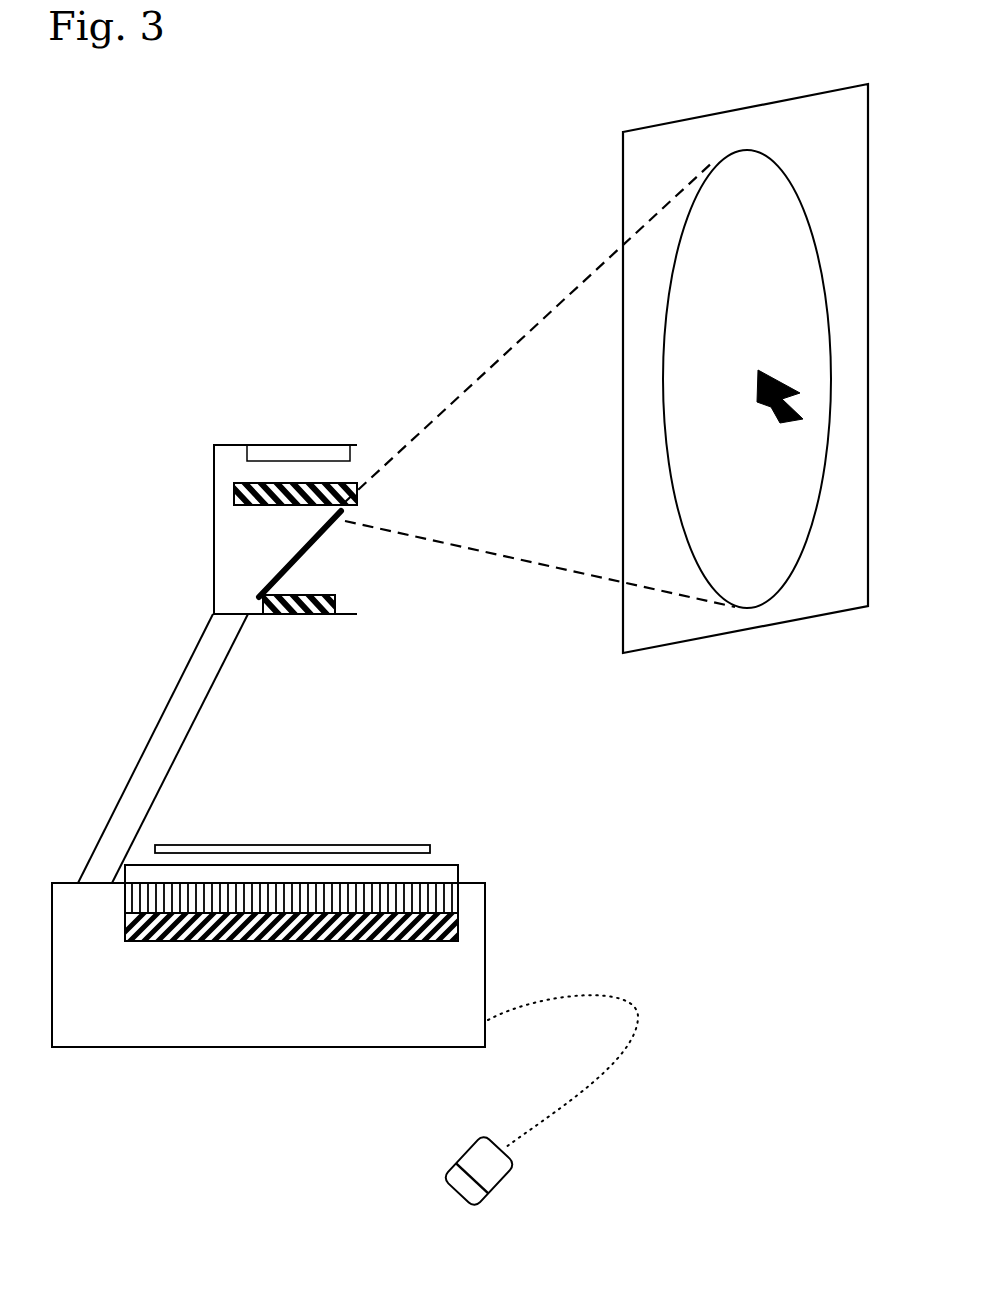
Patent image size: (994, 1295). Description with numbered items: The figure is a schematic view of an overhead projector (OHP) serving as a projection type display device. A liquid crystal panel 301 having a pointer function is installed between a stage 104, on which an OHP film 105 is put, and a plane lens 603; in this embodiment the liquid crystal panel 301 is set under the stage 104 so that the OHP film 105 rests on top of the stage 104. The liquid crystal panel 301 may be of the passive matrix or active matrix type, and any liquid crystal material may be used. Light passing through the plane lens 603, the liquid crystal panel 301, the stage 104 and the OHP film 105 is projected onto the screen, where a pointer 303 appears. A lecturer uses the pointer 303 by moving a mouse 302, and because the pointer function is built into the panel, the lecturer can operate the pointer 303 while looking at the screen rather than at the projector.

The OHP film 105 is at (400, 845).
The stage 104 is at (450, 864).
The liquid crystal panel 301 is at (447, 900).
The plane lens 603 is at (447, 930).
The pointer 303 is at (784, 420).
The mouse 302 is at (492, 1195).